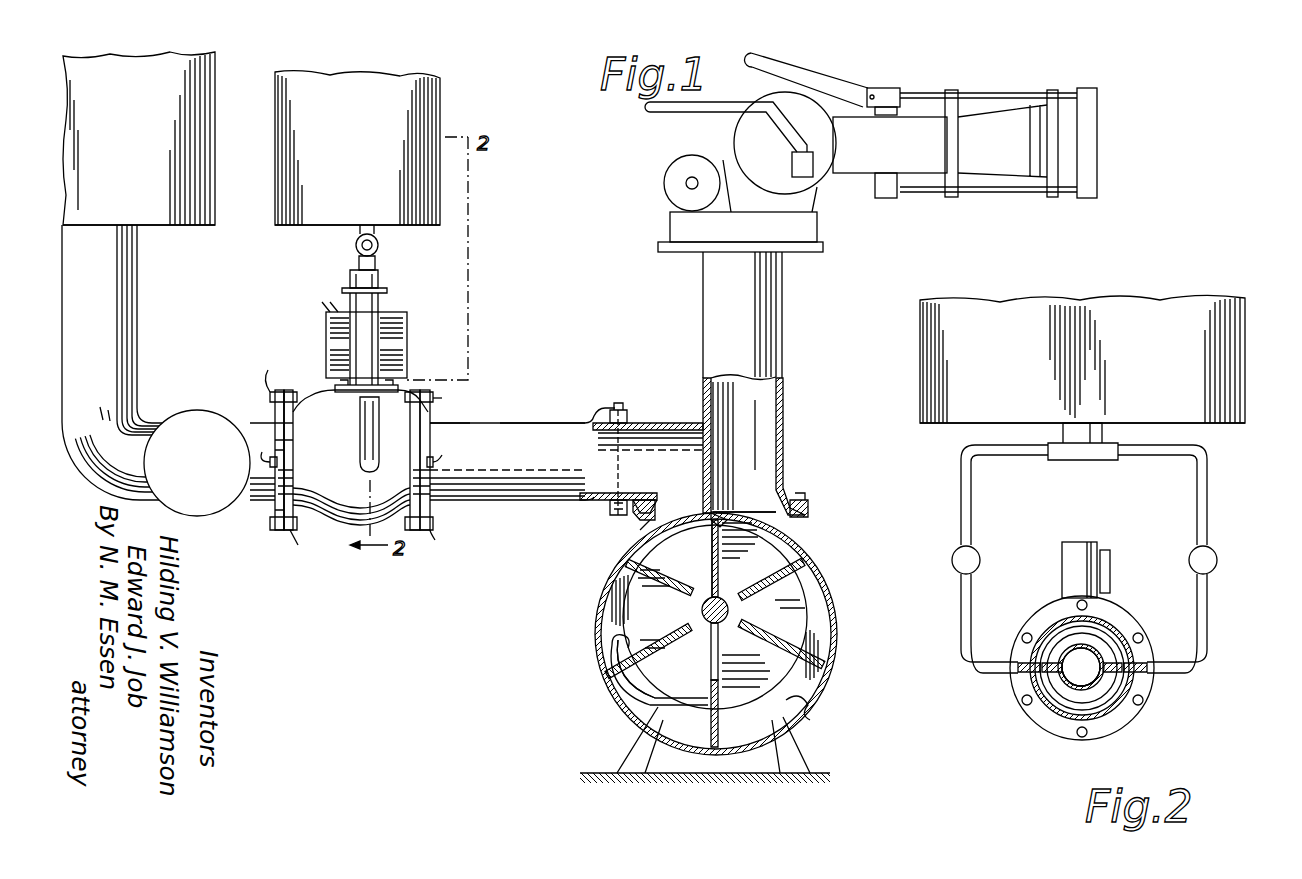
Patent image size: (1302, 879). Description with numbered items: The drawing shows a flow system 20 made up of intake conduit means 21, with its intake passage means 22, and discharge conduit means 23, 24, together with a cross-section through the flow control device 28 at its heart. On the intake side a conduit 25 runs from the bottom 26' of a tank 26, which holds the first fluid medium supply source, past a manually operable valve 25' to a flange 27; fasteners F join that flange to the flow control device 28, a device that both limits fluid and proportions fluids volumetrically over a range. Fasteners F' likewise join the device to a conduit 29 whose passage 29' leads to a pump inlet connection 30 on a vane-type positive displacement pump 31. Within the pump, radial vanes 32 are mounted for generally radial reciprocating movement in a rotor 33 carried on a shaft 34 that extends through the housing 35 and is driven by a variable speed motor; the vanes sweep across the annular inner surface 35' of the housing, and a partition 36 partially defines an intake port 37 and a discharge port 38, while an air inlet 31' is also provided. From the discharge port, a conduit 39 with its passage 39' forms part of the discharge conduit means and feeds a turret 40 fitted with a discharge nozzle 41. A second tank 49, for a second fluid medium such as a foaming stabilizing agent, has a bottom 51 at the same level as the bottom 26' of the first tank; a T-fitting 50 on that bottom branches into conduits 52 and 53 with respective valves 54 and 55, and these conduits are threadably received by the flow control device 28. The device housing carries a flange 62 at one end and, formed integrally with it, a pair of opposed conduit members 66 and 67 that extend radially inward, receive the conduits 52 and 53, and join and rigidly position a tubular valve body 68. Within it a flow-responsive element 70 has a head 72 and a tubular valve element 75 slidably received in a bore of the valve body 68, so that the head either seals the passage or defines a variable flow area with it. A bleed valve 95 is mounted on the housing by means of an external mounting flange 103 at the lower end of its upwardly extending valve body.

In FIG. 1, the flow system 20 is at (552, 412).
In FIG. 1, the intake conduit means 21 is at (488, 412).
In FIG. 1, the intake passage means 22 is at (595, 440).
In FIG. 1, the discharge conduit means 23 is at (790, 357).
In FIG. 1, the discharge conduit means 24 is at (770, 418).
In FIG. 1, the conduit 25 is at (122, 362).
In FIG. 1, the manually operable valve 25' is at (209, 445).
In FIG. 1, the tank 26 is at (155, 138).
In FIG. 1, the bottom of tank 26' is at (139, 238).
In FIG. 1, the flange 27 is at (272, 505).
In FIG. 1, the flow control device 28 is at (340, 520).
In FIG. 2, the flow control device 28 is at (1125, 605).
In FIG. 1, the conduit 29 is at (507, 490).
In FIG. 1, the passage 29' is at (601, 512).
In FIG. 1, the pump inlet connection 30 is at (658, 422).
In FIG. 1, the vane-type positive displacement pump 31 is at (618, 670).
In FIG. 1, the air inlet 31' is at (607, 688).
In FIG. 1, the radial vanes 32 is at (648, 640).
In FIG. 1, the rotor 33 is at (635, 605).
In FIG. 1, the shaft 34 is at (726, 626).
In FIG. 1, the housing 35 is at (739, 634).
In FIG. 1, the annular inner surface 35' is at (822, 726).
In FIG. 1, the partition 36 is at (722, 517).
In FIG. 1, the intake port 37 is at (690, 530).
In FIG. 1, the discharge port 38 is at (795, 522).
In FIG. 1, the conduit 39 is at (768, 381).
In FIG. 1, the passage 39' is at (797, 436).
In FIG. 1, the turret 40 is at (725, 138).
In FIG. 1, the discharge nozzle 41 is at (918, 160).
In FIG. 1, the tank 49 is at (440, 120).
In FIG. 2, the tank 49 is at (1240, 390).
In FIG. 1, the T-fitting 50 is at (355, 242).
In FIG. 2, the T-fitting 50 is at (1100, 437).
In FIG. 1, the bottom of tank 51 is at (290, 228).
In FIG. 2, the bottom of tank 51 is at (950, 428).
In FIG. 1, the conduit 52 is at (381, 250).
In FIG. 2, the conduit 52 is at (961, 505).
In FIG. 1, the conduit 53 is at (350, 265).
In FIG. 2, the conduit 53 is at (1208, 488).
In FIG. 2, the valve 54 is at (953, 568).
In FIG. 2, the valve 55 is at (1219, 560).
In FIG. 1, the flange 62 is at (283, 530).
In FIG. 2, the conduit member 66 is at (1053, 690).
In FIG. 2, the conduit member 67 is at (1120, 703).
In FIG. 2, the tubular valve body 68 is at (1082, 650).
In FIG. 2, the flow-responsive element 70 is at (1068, 713).
In FIG. 2, the head 72 is at (1103, 717).
In FIG. 2, the tubular valve element 75 is at (1097, 650).
In FIG. 1, the bleed valve 95 is at (398, 305).
In FIG. 2, the bleed valve 95 is at (1058, 576).
In FIG. 1, the external mounting flange 103 is at (336, 392).
In FIG. 1, the fasteners F is at (276, 458).
In FIG. 1, the fasteners F' is at (445, 472).